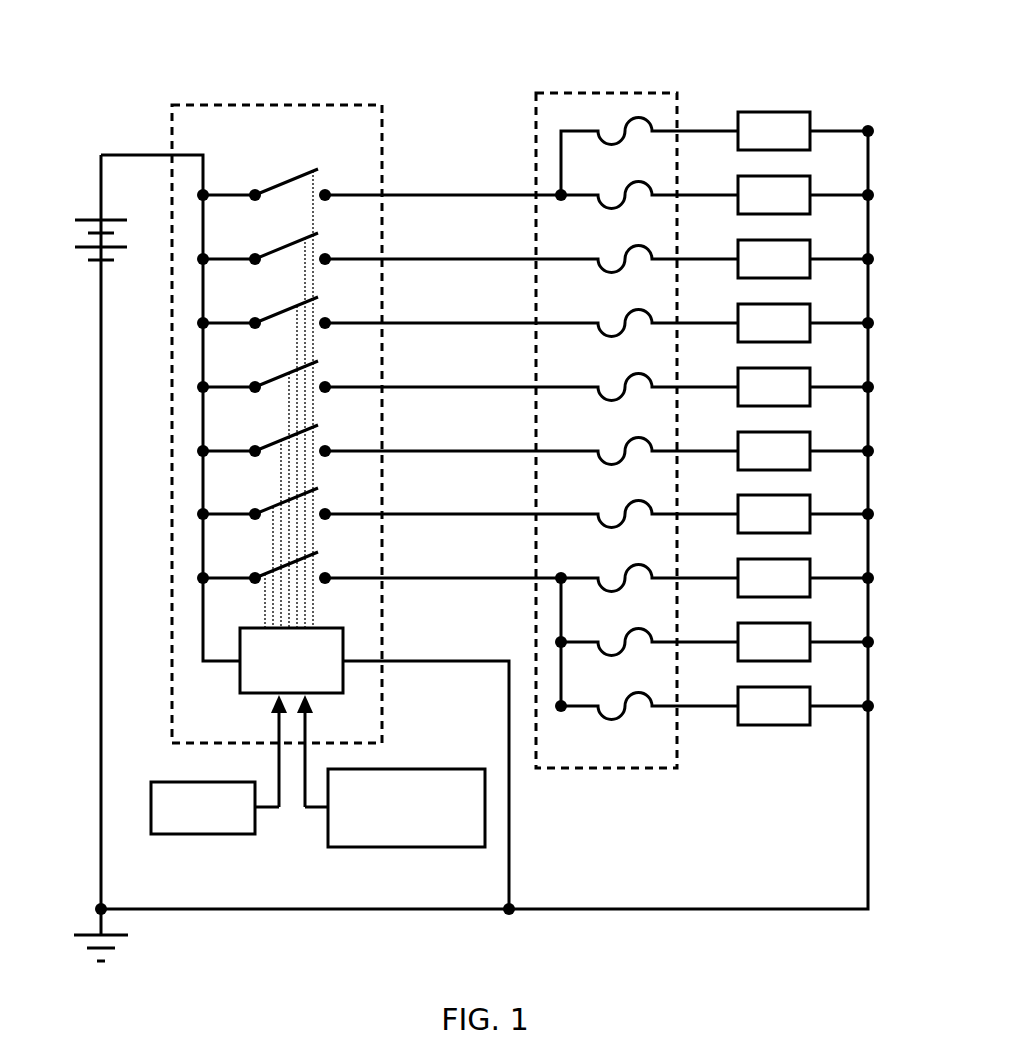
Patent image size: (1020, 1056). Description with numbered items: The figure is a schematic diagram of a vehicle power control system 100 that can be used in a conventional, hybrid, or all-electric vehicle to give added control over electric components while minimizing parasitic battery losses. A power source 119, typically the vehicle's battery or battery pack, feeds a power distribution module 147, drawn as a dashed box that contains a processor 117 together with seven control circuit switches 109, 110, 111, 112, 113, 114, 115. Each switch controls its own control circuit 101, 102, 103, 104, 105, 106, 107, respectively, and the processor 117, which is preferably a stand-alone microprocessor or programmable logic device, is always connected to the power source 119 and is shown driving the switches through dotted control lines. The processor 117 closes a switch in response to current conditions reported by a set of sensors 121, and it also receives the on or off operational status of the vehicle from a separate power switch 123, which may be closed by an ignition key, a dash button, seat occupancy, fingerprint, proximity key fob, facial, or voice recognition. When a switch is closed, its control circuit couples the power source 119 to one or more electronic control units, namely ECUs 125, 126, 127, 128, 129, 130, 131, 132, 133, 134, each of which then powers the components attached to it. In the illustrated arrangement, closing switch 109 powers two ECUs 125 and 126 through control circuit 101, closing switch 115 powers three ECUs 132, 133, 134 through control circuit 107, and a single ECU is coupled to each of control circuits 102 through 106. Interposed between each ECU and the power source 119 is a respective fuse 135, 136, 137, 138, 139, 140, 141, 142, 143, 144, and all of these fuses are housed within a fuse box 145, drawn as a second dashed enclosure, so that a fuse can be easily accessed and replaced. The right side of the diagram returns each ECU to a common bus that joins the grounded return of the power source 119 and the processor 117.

The vehicle power control system 100 is at (222, 67).
The control circuit 101 is at (427, 192).
The control circuit 102 is at (427, 256).
The control circuit 103 is at (427, 320).
The control circuit 104 is at (427, 384).
The control circuit 105 is at (427, 448).
The control circuit 106 is at (427, 511).
The control circuit 107 is at (427, 575).
The control circuit switch 109 is at (300, 175).
The control circuit switch 110 is at (300, 239).
The control circuit switch 111 is at (300, 303).
The control circuit switch 112 is at (300, 367).
The control circuit switch 113 is at (300, 431).
The control circuit switch 114 is at (300, 494).
The control circuit switch 115 is at (300, 558).
The processor 117 is at (262, 695).
The power source 119 is at (60, 212).
The sensors 121 is at (203, 834).
The power switch 123 is at (380, 848).
The electronic control unit 125 is at (790, 112).
The electronic control unit 126 is at (790, 176).
The electronic control unit 127 is at (790, 240).
The electronic control unit 128 is at (790, 304).
The electronic control unit 129 is at (790, 368).
The electronic control unit 130 is at (790, 432).
The electronic control unit 131 is at (790, 495).
The electronic control unit 132 is at (790, 559).
The electronic control unit 133 is at (790, 623).
The electronic control unit 134 is at (790, 687).
The fuse 135 is at (611, 119).
The fuse 136 is at (625, 177).
The fuse 137 is at (617, 238).
The fuse 138 is at (617, 302).
The fuse 139 is at (617, 366).
The fuse 140 is at (617, 430).
The fuse 141 is at (617, 493).
The fuse 142 is at (617, 558).
The fuse 143 is at (626, 622).
The fuse 144 is at (626, 687).
The fuse box 145 is at (560, 91).
The power distribution module 147 is at (288, 102).